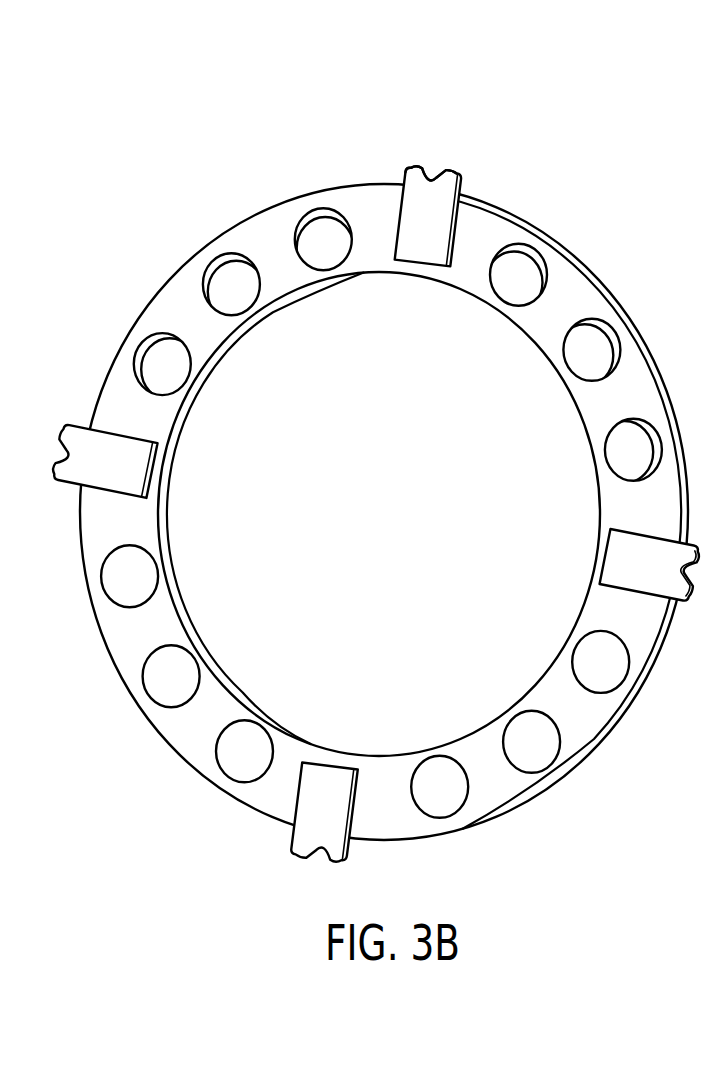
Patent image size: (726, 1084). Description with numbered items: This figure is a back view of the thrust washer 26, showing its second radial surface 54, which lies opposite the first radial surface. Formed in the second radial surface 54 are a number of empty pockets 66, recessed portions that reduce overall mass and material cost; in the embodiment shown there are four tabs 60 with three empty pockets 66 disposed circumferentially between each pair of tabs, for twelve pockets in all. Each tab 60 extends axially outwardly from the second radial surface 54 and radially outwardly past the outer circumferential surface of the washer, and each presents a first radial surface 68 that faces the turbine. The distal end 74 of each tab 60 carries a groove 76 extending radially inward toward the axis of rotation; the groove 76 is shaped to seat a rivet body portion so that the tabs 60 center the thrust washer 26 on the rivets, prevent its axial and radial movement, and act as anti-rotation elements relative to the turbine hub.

The thrust washer 26 is at (560, 130).
The second radial surface 54 is at (184, 301).
The tab 60 is at (395, 222).
The empty pocket 66 is at (163, 362).
The first radial surface 68 is at (438, 241).
The distal end 74 is at (460, 174).
The groove 76 is at (418, 172).